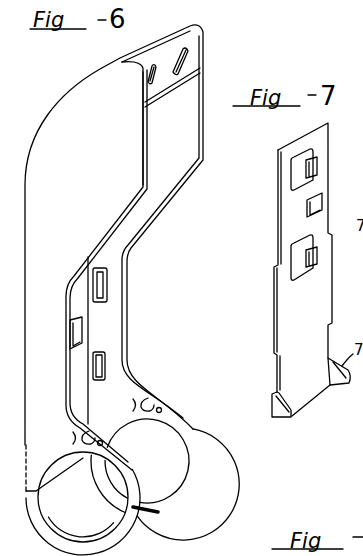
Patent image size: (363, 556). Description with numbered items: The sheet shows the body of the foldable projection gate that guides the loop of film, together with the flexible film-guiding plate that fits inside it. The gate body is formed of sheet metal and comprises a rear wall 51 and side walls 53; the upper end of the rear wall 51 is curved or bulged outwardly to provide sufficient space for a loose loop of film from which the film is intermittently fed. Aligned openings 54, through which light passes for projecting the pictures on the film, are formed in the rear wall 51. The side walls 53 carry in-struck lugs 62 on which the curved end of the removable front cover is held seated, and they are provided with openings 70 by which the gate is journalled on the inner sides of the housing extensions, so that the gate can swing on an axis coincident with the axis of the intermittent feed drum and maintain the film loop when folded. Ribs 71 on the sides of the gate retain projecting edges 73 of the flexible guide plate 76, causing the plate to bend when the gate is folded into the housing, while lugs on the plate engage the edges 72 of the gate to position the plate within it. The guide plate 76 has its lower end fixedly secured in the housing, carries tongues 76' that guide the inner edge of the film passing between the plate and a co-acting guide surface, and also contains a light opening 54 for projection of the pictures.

In FIG. 6, the side walls 53 is at (127, 179).
In FIG. 6, the aligned openings 54 is at (70, 322).
In FIG. 7, the aligned openings 54 is at (323, 196).
In FIG. 6, the rear wall 51 is at (82, 356).
In FIG. 6, the ribs 71 is at (107, 360).
In FIG. 6, the in-struck lugs 62 is at (147, 398).
In FIG. 6, the openings 70 is at (185, 446).
In FIG. 6, the edges 72 is at (147, 517).
In FIG. 7, the projecting edges 73 is at (334, 295).
In FIG. 7, the flexible guide plate 76 is at (277, 226).
In FIG. 7, the tongues 76' is at (333, 213).